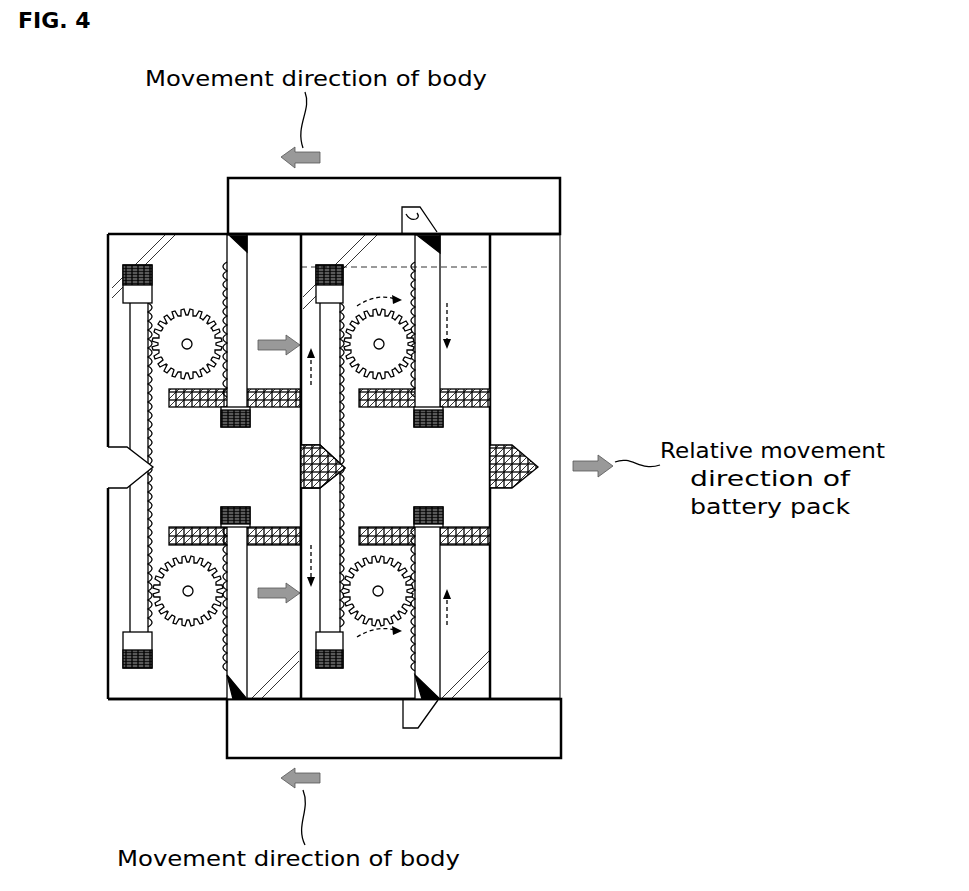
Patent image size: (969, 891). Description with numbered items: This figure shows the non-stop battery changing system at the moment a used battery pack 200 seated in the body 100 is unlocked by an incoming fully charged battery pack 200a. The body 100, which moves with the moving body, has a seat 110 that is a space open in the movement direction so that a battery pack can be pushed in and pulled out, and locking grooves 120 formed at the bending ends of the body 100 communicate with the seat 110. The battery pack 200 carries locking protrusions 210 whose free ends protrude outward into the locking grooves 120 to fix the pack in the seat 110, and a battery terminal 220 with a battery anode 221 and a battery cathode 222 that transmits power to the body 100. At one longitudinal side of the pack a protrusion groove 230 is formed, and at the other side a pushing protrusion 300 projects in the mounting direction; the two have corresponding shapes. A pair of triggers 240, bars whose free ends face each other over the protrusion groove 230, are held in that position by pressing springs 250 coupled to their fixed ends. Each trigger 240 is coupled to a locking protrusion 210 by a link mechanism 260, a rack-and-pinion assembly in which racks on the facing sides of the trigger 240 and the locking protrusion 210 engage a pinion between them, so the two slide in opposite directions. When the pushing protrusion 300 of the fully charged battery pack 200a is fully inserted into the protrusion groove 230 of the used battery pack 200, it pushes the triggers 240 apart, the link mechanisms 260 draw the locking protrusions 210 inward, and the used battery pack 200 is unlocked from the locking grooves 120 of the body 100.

The body 100 is at (510, 762).
The seat 110 is at (526, 262).
The locking groove 120 is at (408, 213).
The battery pack 200 is at (333, 692).
The fully charged battery pack 200a is at (166, 700).
The locking protrusion 210 is at (233, 275).
The battery terminal 220 is at (443, 436).
The battery anode 221 is at (455, 390).
The battery cathode 222 is at (468, 528).
The protrusion groove 230 is at (110, 466).
The trigger 240 is at (320, 313).
The pressing spring 250 is at (126, 270).
The link mechanism 260 is at (373, 322).
The pushing protrusion 300 is at (301, 467).